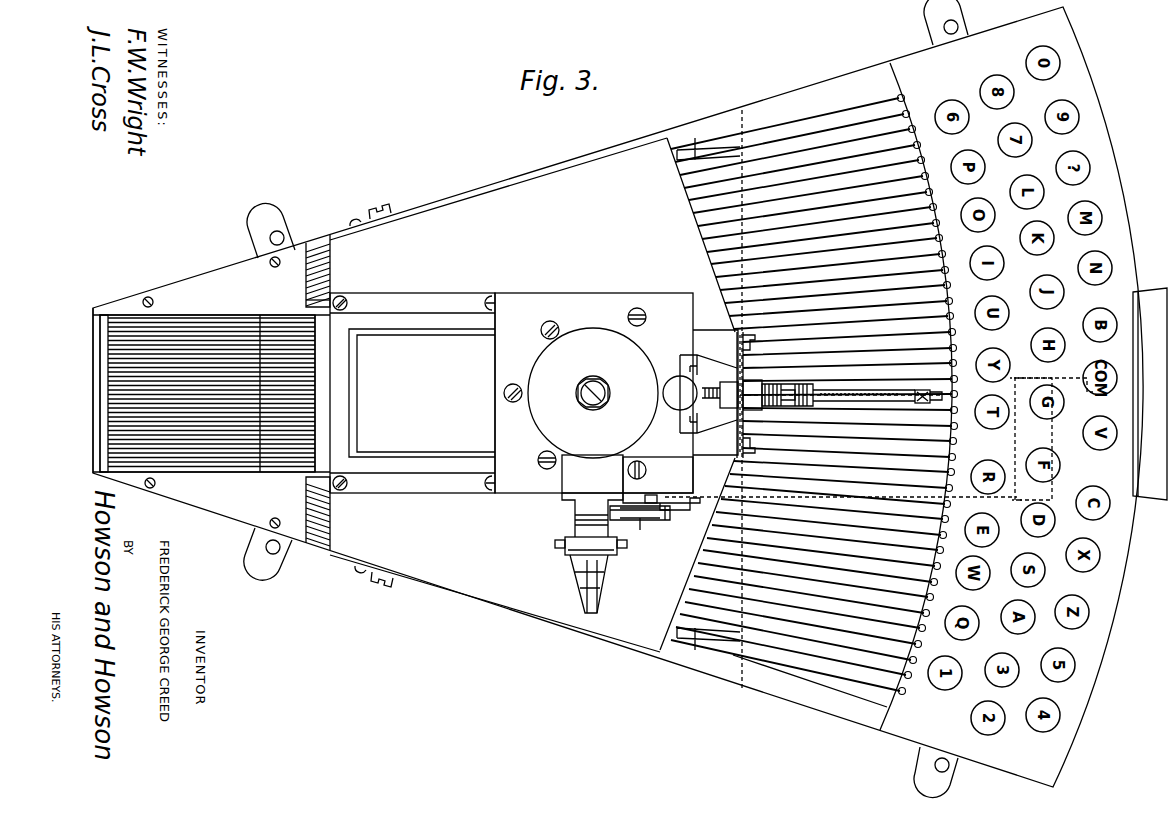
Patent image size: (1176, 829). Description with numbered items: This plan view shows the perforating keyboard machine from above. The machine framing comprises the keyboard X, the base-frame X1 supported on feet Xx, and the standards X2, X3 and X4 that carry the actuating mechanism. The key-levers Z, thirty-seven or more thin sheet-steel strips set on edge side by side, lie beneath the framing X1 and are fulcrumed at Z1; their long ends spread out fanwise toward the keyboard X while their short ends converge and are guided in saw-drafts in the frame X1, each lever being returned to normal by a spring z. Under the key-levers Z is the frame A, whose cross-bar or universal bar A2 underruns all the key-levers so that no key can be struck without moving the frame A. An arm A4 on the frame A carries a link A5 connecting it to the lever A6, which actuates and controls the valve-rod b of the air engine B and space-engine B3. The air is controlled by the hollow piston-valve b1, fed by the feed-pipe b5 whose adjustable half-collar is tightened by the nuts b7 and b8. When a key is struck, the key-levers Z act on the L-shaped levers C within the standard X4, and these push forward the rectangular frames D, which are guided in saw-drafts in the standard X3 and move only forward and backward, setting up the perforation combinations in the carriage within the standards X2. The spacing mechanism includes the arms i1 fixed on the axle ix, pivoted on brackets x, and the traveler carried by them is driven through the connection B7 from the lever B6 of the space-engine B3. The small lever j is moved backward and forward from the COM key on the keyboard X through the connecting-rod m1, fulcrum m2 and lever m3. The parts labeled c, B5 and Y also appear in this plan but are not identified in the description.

The keyboard X is at (618, 397).
The feet Xx is at (293, 226).
The base-frame X1 is at (180, 283).
The standard X2 is at (616, 383).
The standard X3 is at (412, 393).
The standard X4 is at (200, 316).
The L-shaped levers C is at (235, 328).
The comb bar ends c is at (310, 305).
The rectangular frames D is at (410, 335).
The key-levers Z is at (333, 275).
The spring z is at (905, 97).
The fulcrum Z1 is at (358, 214).
The air engine B is at (593, 393).
The space-engine B3 is at (592, 479).
The lever rod B5 is at (585, 608).
The lever of the space-engine B6 is at (617, 555).
The connection B7 is at (600, 588).
The valve-rod b is at (773, 410).
The hollow piston-valve b1 is at (680, 393).
The feed-pipe b5 is at (780, 402).
The nut b7 is at (752, 382).
The nut b8 is at (720, 395).
The small lever j is at (652, 495).
The axle ix is at (678, 480).
The arms of the space-frame i1 is at (670, 510).
The brackets x is at (640, 522).
The frame A is at (695, 140).
The cross-bar or universal bar A2 is at (744, 116).
The arm A4 is at (860, 392).
The link A5 is at (922, 403).
The lever A6 is at (900, 388).
The connecting-rod m1 is at (841, 489).
The fulcrum m2 is at (1015, 440).
The lever m3 is at (1075, 392).
The space bar Y is at (1150, 394).